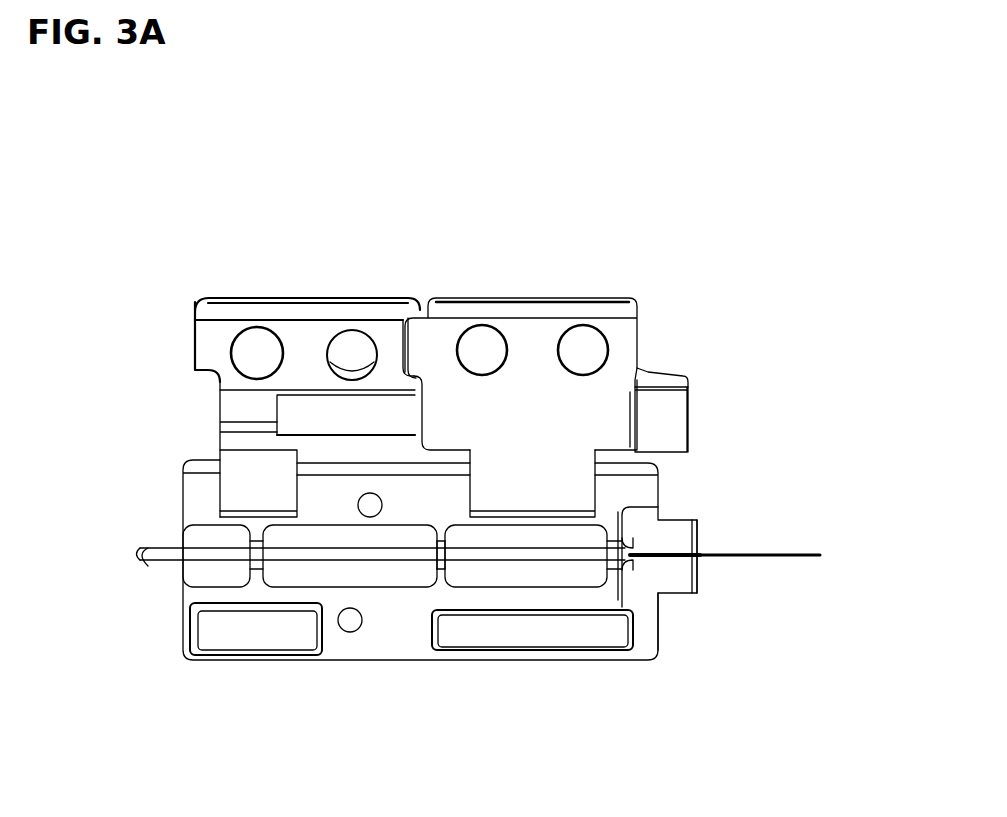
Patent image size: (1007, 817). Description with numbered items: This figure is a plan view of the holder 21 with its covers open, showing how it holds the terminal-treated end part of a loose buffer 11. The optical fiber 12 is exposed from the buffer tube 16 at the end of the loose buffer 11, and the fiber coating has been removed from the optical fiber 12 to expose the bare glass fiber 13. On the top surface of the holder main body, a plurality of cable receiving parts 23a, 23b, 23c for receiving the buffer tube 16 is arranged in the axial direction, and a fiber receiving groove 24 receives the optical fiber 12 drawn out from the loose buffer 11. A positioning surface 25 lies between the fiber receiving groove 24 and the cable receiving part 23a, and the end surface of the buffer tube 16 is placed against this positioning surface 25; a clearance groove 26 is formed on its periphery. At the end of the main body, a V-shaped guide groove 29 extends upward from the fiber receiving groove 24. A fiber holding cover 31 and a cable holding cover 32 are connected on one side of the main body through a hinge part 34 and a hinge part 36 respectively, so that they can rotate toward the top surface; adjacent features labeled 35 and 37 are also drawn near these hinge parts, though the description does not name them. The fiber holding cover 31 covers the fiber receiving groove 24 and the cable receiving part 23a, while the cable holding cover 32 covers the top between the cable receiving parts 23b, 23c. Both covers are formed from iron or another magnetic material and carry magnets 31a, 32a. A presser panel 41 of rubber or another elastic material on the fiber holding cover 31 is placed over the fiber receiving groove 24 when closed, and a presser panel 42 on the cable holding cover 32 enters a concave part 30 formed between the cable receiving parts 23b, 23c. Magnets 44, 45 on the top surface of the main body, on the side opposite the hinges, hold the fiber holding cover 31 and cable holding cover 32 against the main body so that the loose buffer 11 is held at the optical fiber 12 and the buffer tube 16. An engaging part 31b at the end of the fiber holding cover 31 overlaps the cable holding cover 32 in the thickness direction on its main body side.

The loose buffer 11 is at (150, 545).
The optical fiber 12 is at (690, 530).
The bare glass fiber 13 is at (780, 557).
The buffer tube 16 is at (157, 557).
The holder 21 is at (548, 275).
The cable receiving part 23a is at (583, 607).
The cable receiving part 23b is at (417, 567).
The cable receiving part 23c is at (245, 557).
The fiber receiving groove 24 is at (667, 557).
The positioning surface 25 is at (628, 507).
The clearance groove 26 is at (657, 605).
The V-shaped guide groove 29 is at (697, 563).
The concave part 30 is at (325, 572).
The fiber holding cover 31 is at (525, 297).
The magnet 31a is at (477, 348).
The engaging part 31b is at (415, 345).
The cable holding cover 32 is at (233, 298).
The magnet 32a is at (245, 350).
The hinge part 34 is at (528, 472).
The notch 35 is at (553, 700).
The hinge part 36 is at (265, 470).
The step portion 37 is at (232, 480).
The presser panel 41 is at (665, 383).
The presser panel 42 is at (357, 413).
The magnet 44 is at (497, 633).
The magnet 45 is at (238, 633).